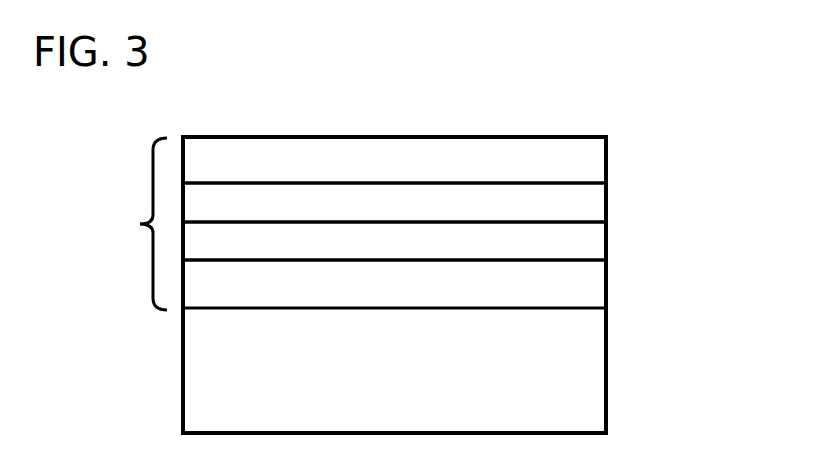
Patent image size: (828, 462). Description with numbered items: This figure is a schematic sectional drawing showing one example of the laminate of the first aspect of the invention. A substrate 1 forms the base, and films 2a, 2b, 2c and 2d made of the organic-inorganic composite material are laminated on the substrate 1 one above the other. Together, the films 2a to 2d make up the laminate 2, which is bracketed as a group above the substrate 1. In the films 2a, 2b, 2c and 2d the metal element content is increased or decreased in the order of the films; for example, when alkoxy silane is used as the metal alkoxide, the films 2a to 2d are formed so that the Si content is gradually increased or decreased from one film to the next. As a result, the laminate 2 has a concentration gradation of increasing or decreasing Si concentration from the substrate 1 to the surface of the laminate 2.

The substrate 1 is at (592, 371).
The laminate 2 is at (141, 224).
The film 2a is at (588, 286).
The film 2b is at (588, 246).
The film 2c is at (588, 208).
The film 2d is at (588, 163).